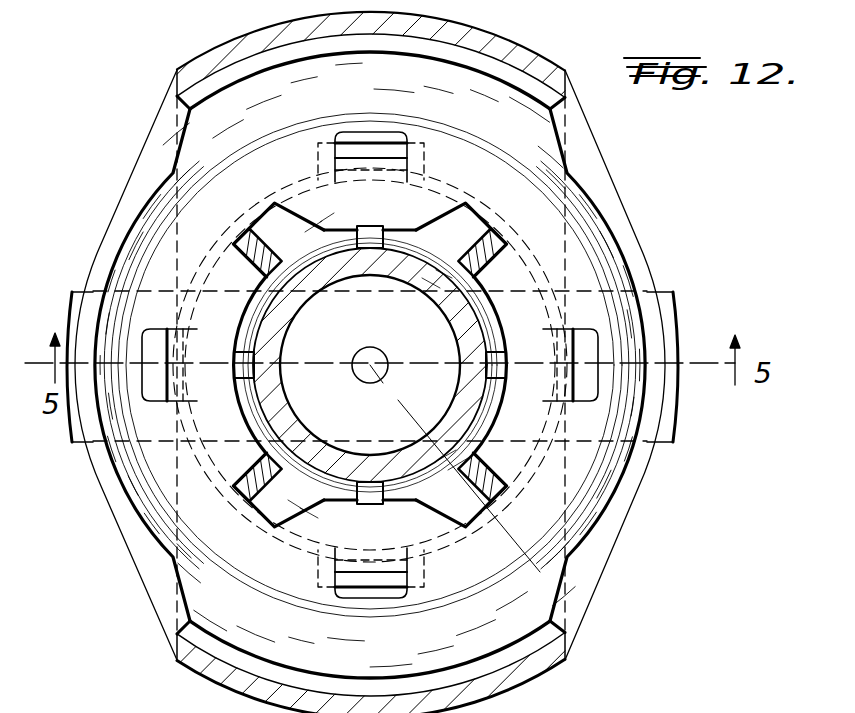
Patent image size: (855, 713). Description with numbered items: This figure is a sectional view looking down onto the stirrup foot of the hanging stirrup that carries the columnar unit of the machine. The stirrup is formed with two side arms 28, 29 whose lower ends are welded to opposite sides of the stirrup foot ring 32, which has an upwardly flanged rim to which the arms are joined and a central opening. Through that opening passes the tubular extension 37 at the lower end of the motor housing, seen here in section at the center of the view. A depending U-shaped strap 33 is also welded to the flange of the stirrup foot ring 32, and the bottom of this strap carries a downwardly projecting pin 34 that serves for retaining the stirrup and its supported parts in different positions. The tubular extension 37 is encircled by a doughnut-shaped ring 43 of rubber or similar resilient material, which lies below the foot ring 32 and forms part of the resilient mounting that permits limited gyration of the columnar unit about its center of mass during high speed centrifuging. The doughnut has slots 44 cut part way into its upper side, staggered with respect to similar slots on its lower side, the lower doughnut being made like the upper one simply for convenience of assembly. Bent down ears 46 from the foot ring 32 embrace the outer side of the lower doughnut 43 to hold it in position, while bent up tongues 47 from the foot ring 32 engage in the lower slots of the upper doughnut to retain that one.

The stirrup side arm 28 is at (517, 680).
The stirrup side arm 29 is at (530, 62).
The stirrup foot ring 32 is at (203, 592).
The U-shaped strap 33 is at (668, 313).
The pin 34 is at (388, 370).
The tubular extension 37 is at (290, 430).
The lower doughnut ring 43 is at (428, 480).
The upper slots 44 is at (252, 363).
The bent down ears 46 is at (378, 181).
The bent up tongues 47 is at (262, 250).